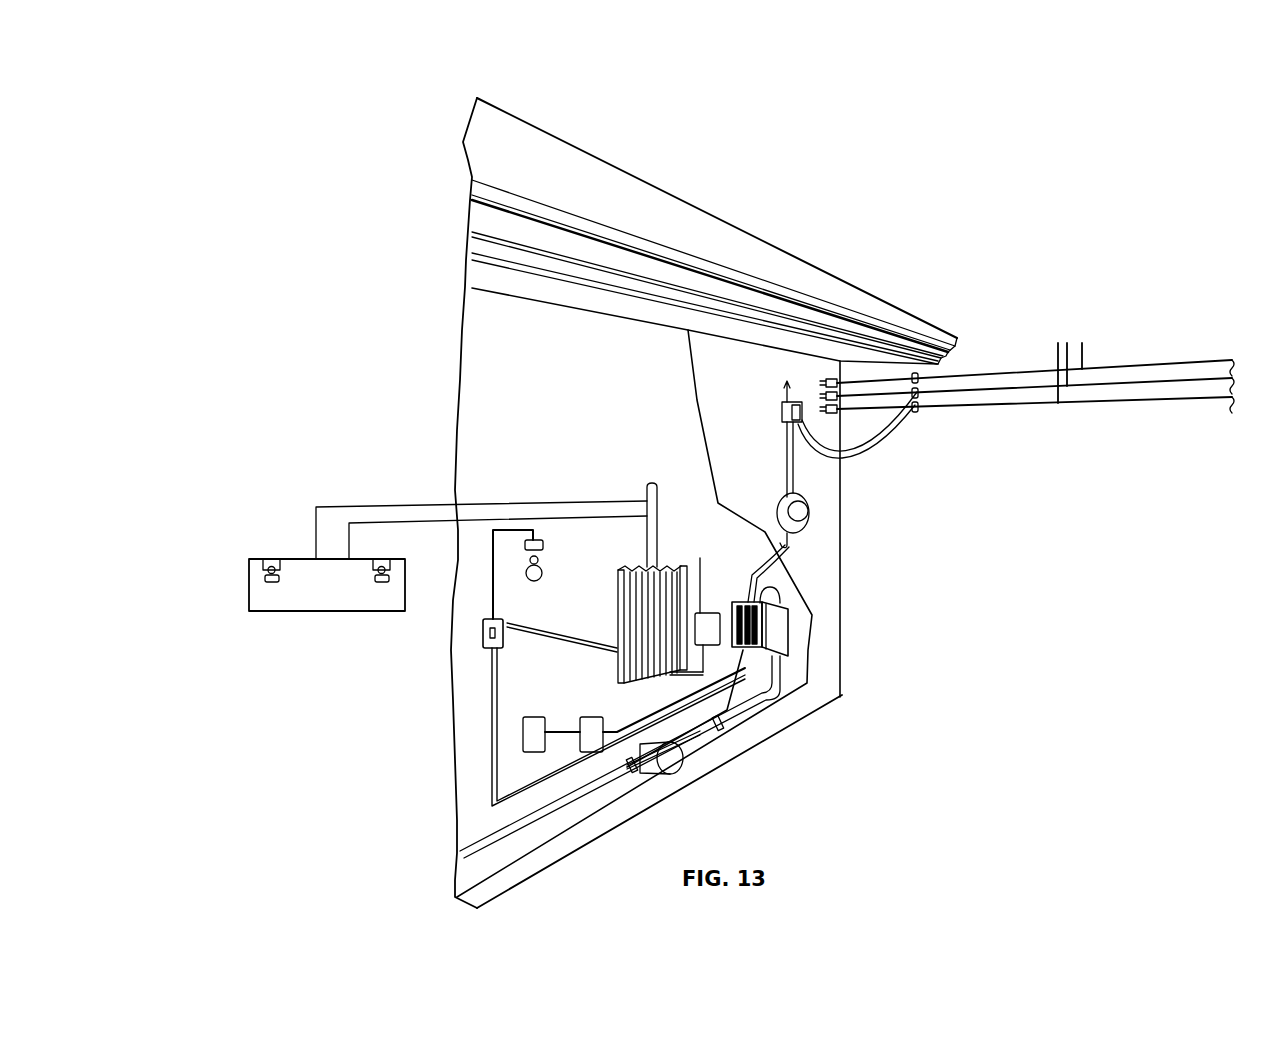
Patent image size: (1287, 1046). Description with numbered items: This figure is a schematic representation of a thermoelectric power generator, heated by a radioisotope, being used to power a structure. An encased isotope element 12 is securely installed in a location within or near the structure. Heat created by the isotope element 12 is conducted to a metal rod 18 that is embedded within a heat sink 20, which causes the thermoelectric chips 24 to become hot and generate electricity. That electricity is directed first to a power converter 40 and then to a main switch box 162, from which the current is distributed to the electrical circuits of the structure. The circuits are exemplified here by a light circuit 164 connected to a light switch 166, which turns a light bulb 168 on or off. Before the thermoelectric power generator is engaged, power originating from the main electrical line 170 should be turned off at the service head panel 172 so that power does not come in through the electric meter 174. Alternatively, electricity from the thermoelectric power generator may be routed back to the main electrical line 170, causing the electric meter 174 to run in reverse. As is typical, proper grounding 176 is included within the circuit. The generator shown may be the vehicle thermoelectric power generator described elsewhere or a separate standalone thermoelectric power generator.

The encased isotope element 12 is at (298, 558).
The metal rod 18 is at (645, 568).
The heat sink 20 is at (665, 567).
The thermoelectric chips 24 is at (660, 633).
The power converter 40 is at (703, 620).
The main switch box 162 is at (792, 628).
The light circuit 164 is at (493, 710).
The light switch 166 is at (483, 633).
The light bulb 168 is at (541, 578).
The main electrical line 170 is at (1130, 400).
The service head panel 172 is at (783, 408).
The electric meter 174 is at (810, 507).
The grounding 176 is at (795, 675).